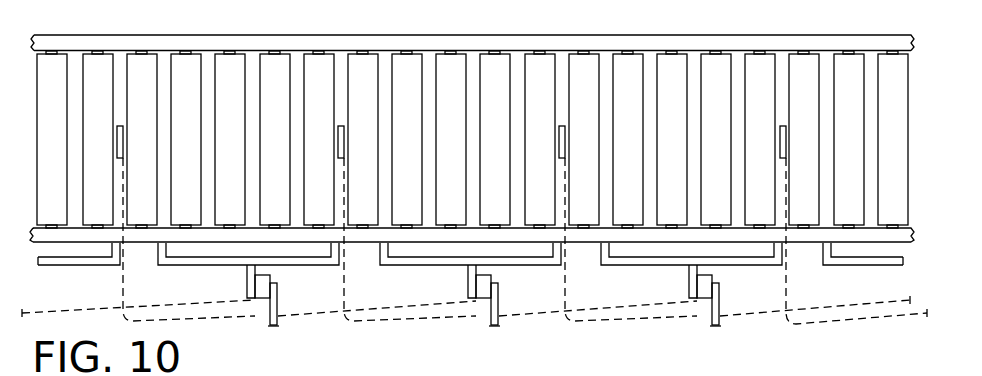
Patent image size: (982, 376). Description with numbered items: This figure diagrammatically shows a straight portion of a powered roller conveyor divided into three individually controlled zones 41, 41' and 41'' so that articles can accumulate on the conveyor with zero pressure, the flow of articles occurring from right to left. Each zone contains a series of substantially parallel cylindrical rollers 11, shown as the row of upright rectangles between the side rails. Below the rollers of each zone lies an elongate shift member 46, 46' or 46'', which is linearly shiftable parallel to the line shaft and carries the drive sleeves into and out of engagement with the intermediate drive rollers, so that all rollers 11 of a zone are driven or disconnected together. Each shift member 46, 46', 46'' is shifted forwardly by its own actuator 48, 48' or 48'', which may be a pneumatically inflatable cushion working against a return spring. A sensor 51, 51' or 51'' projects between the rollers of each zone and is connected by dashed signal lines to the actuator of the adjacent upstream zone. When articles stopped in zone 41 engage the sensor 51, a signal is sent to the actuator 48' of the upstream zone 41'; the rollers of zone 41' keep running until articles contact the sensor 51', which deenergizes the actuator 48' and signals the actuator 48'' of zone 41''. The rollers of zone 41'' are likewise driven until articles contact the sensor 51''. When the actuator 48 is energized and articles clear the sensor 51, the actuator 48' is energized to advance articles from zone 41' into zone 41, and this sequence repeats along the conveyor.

The cylindrical roller 11 is at (277, 70).
The zone 41 is at (195, 27).
The zone 41' is at (469, 27).
The zone 41'' is at (747, 27).
The shift member 46 is at (247, 268).
The shift member 46' is at (469, 268).
The shift member 46'' is at (691, 268).
The actuator 48 is at (250, 306).
The actuator 48' is at (459, 306).
The actuator 48'' is at (680, 306).
The sensor 51 is at (170, 210).
The sensor 51' is at (391, 210).
The sensor 51'' is at (611, 210).